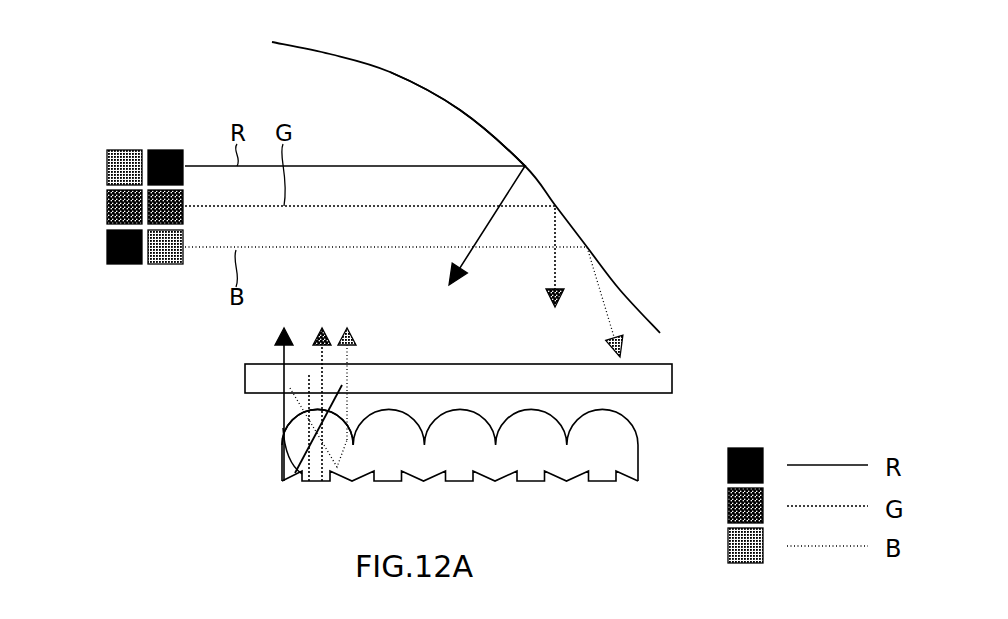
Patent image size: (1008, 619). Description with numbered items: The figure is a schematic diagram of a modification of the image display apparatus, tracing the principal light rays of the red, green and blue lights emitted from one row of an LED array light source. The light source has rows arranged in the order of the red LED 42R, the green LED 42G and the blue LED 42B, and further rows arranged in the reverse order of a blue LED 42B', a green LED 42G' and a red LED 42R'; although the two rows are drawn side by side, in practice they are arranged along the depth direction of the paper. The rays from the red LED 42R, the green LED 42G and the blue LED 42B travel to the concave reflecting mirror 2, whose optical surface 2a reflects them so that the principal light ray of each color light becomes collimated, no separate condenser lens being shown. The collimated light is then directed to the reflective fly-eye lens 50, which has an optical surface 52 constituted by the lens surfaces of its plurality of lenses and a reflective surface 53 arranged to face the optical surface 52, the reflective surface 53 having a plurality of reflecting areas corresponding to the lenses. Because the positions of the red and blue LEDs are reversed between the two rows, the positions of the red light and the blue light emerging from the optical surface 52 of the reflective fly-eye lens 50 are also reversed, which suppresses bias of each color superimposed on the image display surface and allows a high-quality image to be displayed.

The concave reflecting mirror 2 is at (376, 66).
The optical surface 2a is at (392, 71).
The blue LED 42B' is at (107, 143).
The red LED 42R is at (171, 142).
The green LED 42G is at (91, 186).
The green LED 42G' is at (102, 210).
The red LED 42R' is at (107, 270).
The blue LED 42B is at (171, 274).
The reflective fly-eye lens 50 is at (457, 471).
The optical surface 52 is at (292, 420).
The reflective surface 53 is at (425, 462).